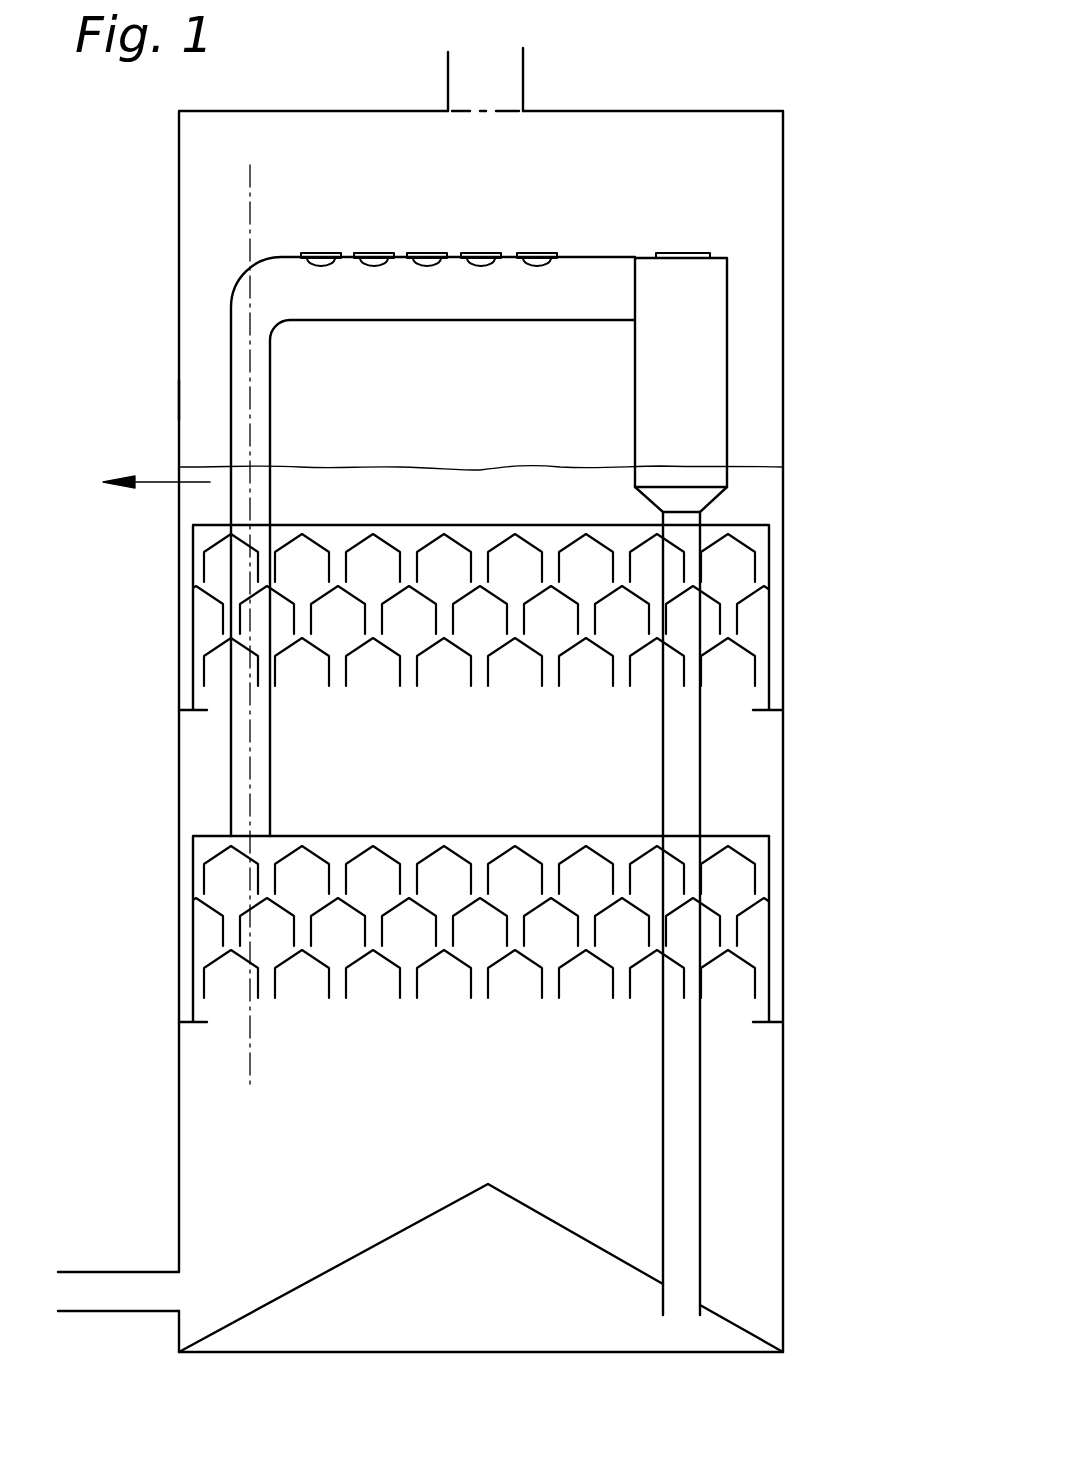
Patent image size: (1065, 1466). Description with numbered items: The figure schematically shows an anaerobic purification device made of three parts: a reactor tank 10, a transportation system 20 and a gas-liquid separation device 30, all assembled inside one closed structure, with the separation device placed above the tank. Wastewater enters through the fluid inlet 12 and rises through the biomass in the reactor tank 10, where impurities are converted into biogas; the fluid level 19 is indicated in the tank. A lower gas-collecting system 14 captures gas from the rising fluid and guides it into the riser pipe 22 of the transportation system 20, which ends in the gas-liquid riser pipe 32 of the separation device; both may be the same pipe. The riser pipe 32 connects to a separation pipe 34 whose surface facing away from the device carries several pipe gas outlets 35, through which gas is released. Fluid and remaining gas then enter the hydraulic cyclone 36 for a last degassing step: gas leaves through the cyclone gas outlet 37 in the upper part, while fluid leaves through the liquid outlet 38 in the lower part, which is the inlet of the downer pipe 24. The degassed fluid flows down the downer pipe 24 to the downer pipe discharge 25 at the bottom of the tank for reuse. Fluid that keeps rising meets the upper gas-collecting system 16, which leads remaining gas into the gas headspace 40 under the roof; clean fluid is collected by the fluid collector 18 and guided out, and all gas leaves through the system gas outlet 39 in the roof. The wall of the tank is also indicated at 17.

The reactor tank 10 is at (800, 1168).
The fluid inlet 12 is at (108, 1291).
The lower gas-collecting system 14 is at (240, 935).
The upper gas-collecting system 16 is at (215, 598).
The vessel wall 17 is at (178, 408).
The fluid collector 18 is at (152, 482).
The fluid level 19 is at (752, 440).
The transportation system 20 is at (750, 746).
The riser pipe 22 is at (248, 768).
The downer pipe 24 is at (697, 768).
The downer pipe discharge 25 is at (718, 1337).
The gas-liquid separation device 30 is at (727, 277).
The gas-liquid riser pipe 32 is at (238, 380).
The separation pipe 34 is at (568, 296).
The pipe gas outlet 35 is at (428, 178).
The hydraulic cyclone 36 is at (707, 344).
The cyclone gas outlet 37 is at (683, 257).
The liquid outlet 38 is at (728, 503).
The system gas outlet 39 is at (523, 72).
The gas headspace 40 is at (222, 140).